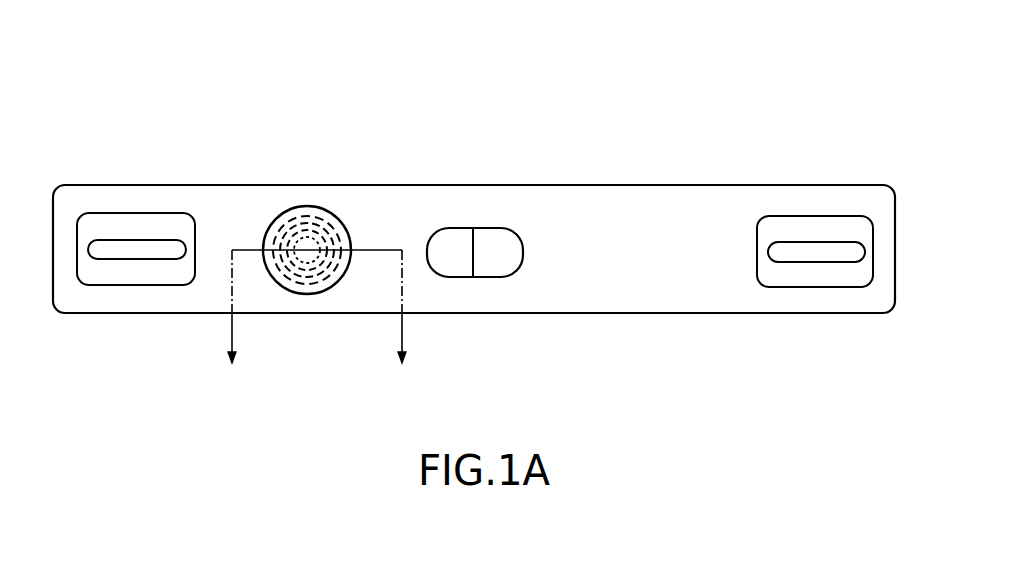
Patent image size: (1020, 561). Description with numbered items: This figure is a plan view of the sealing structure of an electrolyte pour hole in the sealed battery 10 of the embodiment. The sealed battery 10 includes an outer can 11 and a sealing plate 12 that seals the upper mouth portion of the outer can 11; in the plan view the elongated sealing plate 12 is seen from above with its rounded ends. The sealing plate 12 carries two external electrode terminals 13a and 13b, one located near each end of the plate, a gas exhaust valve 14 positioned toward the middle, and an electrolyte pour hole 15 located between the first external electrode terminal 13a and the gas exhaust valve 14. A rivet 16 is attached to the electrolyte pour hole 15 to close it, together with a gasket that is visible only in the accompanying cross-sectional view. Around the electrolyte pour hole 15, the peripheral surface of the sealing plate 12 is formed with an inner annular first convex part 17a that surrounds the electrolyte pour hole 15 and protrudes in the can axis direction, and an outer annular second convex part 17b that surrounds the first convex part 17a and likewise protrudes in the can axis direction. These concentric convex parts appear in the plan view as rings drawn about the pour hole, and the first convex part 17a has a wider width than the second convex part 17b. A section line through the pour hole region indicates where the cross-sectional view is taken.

The sealed battery 10 is at (84, 40).
The outer can 11 is at (645, 313).
The sealing plate 12 is at (633, 247).
The external electrode terminal 13a is at (133, 252).
The external electrode terminal 13b is at (810, 252).
The gas exhaust valve 14 is at (457, 248).
The electrolyte pour hole 15 is at (312, 245).
The rivet 16 is at (340, 238).
The first convex part 17a is at (307, 222).
The second convex part 17b is at (287, 217).